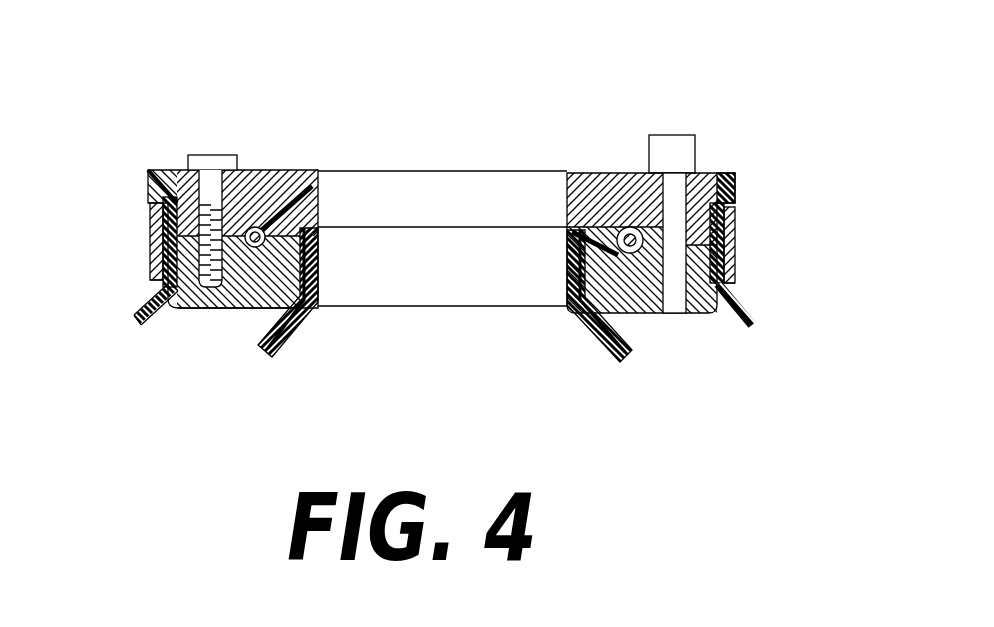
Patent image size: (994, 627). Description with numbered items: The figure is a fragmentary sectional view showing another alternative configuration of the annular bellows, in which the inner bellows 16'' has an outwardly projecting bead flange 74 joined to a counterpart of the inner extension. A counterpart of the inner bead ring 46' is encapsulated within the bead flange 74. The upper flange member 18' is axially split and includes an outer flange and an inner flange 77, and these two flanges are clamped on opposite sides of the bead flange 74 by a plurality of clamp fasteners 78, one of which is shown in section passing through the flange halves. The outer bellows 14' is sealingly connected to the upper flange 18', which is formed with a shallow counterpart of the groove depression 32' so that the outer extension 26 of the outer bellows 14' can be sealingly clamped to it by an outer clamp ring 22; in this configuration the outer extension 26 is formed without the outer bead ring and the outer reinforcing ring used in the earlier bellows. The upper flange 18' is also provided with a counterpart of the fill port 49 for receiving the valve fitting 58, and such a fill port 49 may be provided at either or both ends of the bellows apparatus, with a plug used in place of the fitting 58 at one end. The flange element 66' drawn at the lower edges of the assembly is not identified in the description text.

The inner bellows 16'' is at (455, 213).
The upper flange member 18' is at (253, 202).
The bead flange 74 is at (263, 308).
The inner flange 77 is at (213, 312).
The inner bead ring 46' is at (319, 206).
The clamp fastener 78 is at (225, 155).
The outer extension 26 is at (148, 178).
The outer clamp ring 22 is at (150, 242).
The groove depression 32' is at (110, 287).
The outer bellows 14' is at (117, 326).
The L-shaped flange 66' is at (323, 310).
The valve fitting 58 is at (695, 146).
The fill port 49 is at (683, 243).